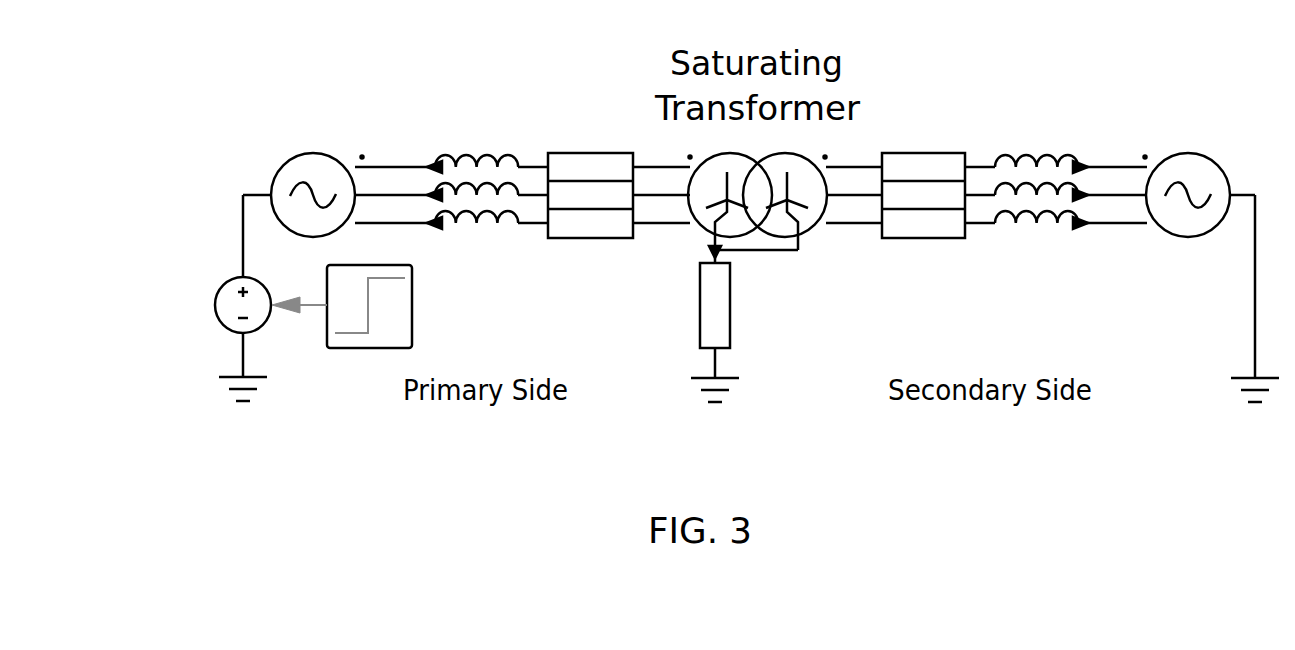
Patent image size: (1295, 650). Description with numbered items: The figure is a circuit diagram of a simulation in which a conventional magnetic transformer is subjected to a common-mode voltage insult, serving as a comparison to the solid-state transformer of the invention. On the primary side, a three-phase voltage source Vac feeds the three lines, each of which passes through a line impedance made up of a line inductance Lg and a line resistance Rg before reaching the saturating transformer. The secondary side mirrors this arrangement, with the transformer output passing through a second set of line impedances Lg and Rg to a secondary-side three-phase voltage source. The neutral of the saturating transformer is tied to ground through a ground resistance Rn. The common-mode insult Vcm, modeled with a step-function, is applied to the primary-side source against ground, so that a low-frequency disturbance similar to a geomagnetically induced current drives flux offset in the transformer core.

The primary-side three-phase voltage source Vac is at (301, 160).
The simulated CM voltage insult Vcm is at (197, 339).
The line inductance Lg is at (757, 168).
The line resistance Rg is at (756, 173).
The ground resistance Rn is at (688, 326).